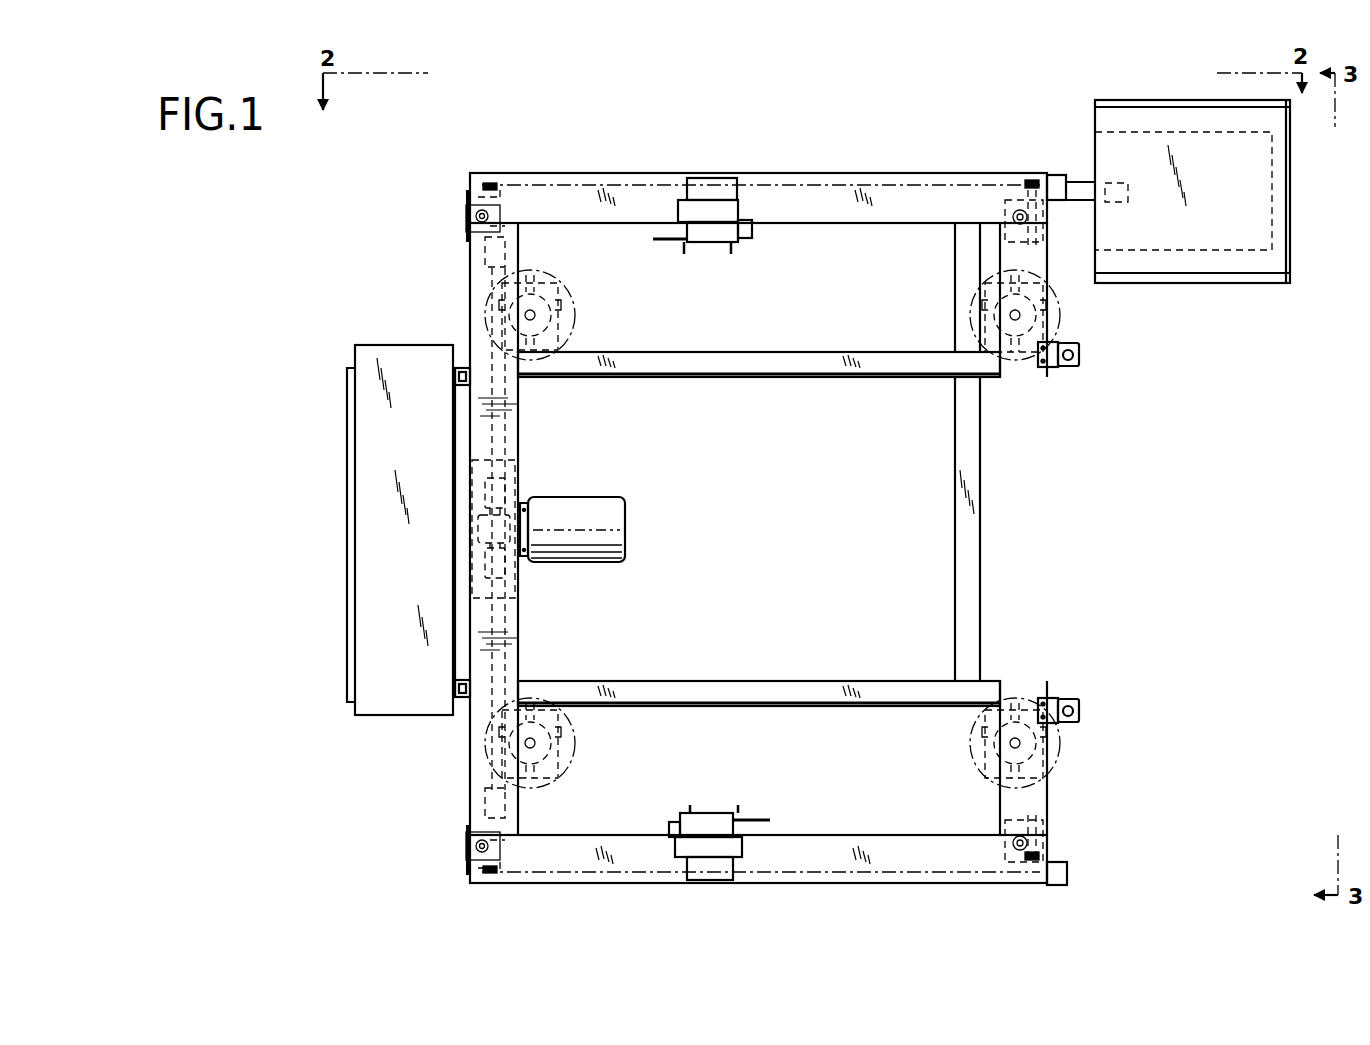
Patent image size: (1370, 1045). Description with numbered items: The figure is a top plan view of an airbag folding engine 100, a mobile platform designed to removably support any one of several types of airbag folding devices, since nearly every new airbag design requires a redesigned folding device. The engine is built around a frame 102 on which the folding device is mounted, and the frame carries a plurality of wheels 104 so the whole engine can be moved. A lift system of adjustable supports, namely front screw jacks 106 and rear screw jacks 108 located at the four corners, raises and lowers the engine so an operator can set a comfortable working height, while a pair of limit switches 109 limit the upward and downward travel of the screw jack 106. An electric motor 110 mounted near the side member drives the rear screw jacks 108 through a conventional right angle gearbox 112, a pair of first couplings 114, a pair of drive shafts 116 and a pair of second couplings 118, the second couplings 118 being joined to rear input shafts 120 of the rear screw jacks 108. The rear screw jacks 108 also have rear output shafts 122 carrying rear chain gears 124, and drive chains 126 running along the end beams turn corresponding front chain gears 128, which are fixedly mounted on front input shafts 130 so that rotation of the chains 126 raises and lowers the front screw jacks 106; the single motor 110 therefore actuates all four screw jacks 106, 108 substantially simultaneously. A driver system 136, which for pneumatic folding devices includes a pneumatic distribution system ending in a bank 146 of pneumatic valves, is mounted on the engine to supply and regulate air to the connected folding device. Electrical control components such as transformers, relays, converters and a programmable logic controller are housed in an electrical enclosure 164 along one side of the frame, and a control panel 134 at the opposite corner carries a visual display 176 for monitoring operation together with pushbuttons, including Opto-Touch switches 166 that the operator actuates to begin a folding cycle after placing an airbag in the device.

The airbag folding engine 100 is at (1082, 590).
The frame 102 is at (800, 378).
The wheels 104 is at (576, 316).
The front screw jacks 106 is at (1042, 214).
The rear screw jacks 108 is at (468, 215).
The limit switches 109 is at (998, 242).
The electric motor 110 is at (620, 520).
The right angle gearbox 112 is at (480, 530).
The first couplings 114 is at (505, 495).
The drive shafts 116 is at (500, 403).
The second couplings 118 is at (505, 253).
The rear input shafts 120 is at (503, 230).
The rear output shafts 122 is at (498, 193).
The rear chain gears 124 is at (488, 184).
The drive chains 126 is at (838, 185).
The front chain gears 128 is at (1030, 192).
The front input shafts 130 is at (1022, 197).
The control panel 134 is at (1255, 302).
The driver system 136 is at (722, 166).
The bank of pneumatic valves 146 is at (737, 264).
The electrical enclosure 164 is at (372, 465).
The Opto-Touch switches 166 is at (1080, 355).
The visual display 176 is at (1202, 285).